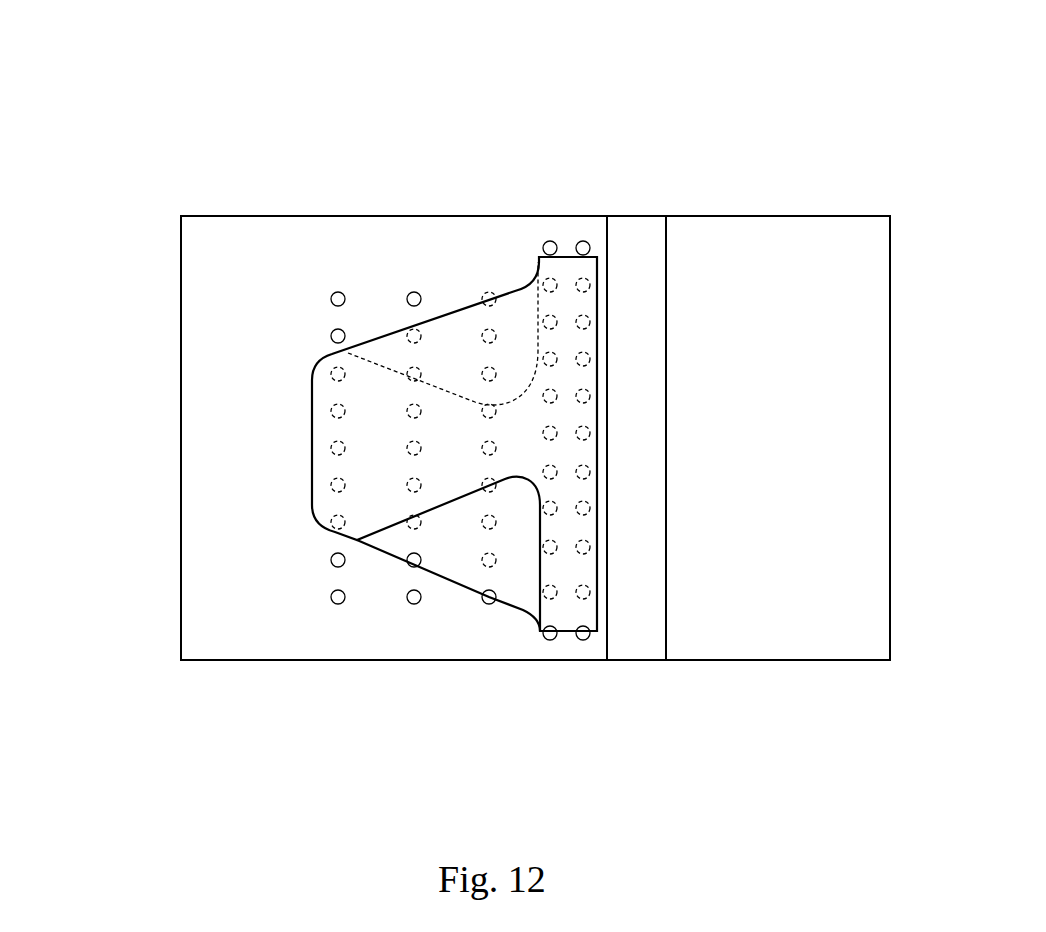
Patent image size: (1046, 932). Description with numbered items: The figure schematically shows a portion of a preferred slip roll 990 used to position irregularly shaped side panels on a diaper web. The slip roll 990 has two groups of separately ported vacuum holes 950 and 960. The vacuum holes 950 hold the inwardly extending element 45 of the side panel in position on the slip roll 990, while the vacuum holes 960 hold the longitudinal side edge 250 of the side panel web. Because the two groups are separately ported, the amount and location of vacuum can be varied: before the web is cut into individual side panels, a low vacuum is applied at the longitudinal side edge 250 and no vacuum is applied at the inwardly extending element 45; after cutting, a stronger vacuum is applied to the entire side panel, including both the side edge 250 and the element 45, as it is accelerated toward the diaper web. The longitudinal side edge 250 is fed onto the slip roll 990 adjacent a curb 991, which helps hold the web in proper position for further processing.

The inwardly extending element 45 is at (378, 292).
The longitudinal side edge 250 is at (568, 277).
The vacuum holes 950 is at (407, 485).
The vacuum holes 960 is at (556, 398).
The slip roll 990 is at (733, 205).
The curb 991 is at (638, 319).